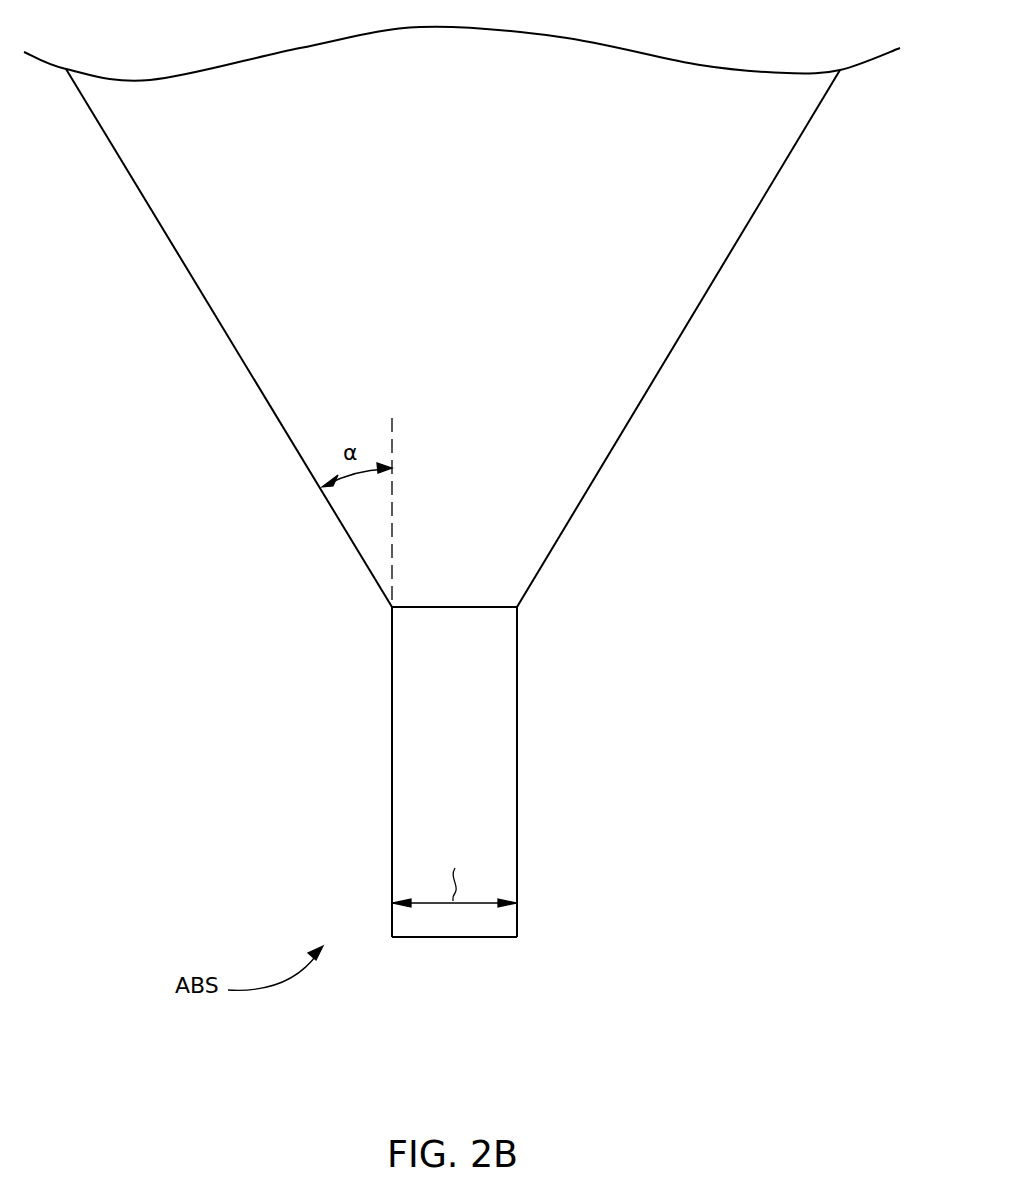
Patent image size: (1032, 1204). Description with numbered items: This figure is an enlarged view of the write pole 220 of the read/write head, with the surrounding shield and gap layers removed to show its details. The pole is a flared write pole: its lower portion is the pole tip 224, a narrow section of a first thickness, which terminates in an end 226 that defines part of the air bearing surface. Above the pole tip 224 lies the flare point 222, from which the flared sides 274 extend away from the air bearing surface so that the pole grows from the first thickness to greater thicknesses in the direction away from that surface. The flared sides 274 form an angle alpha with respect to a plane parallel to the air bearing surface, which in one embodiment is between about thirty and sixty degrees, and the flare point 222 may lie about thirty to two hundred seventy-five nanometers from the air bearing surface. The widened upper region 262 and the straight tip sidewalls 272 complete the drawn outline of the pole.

The flared upper portion of main pole 262 is at (466, 338).
The flared sides 274 is at (253, 378).
The write pole 220 is at (483, 573).
The flare point 222 is at (465, 607).
The pole tip 224 is at (473, 760).
The pole tip sidewalls 272 is at (392, 822).
The end 226 is at (473, 937).